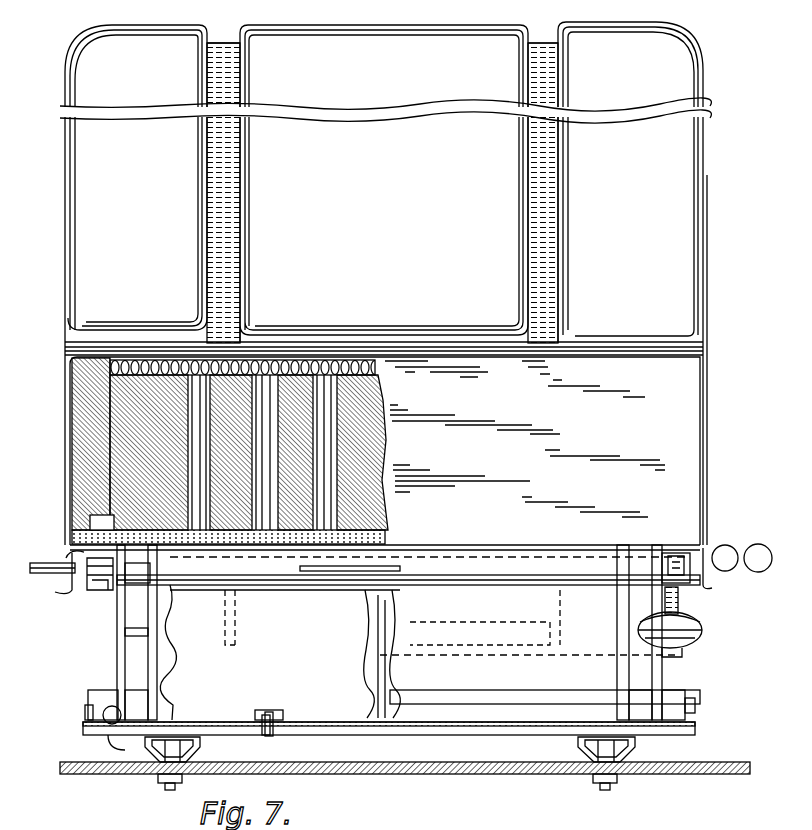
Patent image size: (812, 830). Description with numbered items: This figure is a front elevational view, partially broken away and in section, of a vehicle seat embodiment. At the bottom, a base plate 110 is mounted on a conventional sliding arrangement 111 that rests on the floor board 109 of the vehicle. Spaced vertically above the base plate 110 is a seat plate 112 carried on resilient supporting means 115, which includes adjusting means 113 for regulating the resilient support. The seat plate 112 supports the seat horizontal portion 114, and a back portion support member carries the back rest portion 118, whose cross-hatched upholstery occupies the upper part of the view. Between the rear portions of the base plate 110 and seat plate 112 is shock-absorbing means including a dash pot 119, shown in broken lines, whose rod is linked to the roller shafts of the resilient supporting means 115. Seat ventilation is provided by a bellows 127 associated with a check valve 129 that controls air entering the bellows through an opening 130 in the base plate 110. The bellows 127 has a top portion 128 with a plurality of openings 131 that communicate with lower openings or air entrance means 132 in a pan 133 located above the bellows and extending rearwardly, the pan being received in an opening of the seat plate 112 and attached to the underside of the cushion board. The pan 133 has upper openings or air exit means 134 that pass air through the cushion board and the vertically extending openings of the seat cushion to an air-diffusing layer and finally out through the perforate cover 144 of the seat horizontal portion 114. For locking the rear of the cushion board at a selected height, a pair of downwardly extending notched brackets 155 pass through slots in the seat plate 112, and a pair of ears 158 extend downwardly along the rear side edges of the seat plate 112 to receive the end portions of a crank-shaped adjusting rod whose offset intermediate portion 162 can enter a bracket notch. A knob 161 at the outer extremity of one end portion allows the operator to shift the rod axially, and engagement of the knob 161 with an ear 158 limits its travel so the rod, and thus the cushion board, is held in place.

The floor board 109 is at (370, 776).
The base plate 110 is at (360, 737).
The sliding arrangement 111 is at (138, 755).
The seat plate 112 is at (128, 530).
The adjusting means 113 is at (694, 605).
The seat horizontal portion 114 is at (64, 472).
The resilient supporting means 115 is at (110, 646).
The back rest portion 118 is at (402, 74).
The dash pot 119 is at (420, 660).
The bellows 127 is at (177, 690).
The top portion 128 is at (240, 600).
The check valve 129 is at (270, 710).
The opening 130 is at (272, 736).
The openings 131 is at (340, 588).
The lower openings 132 is at (350, 569).
The pan 133 is at (408, 572).
The upper openings 134 is at (260, 545).
The perforate cover 144 is at (292, 358).
The brackets 155 is at (236, 645).
The ears 158 is at (70, 595).
The knob 161 is at (730, 547).
The intermediate portion 162 is at (42, 563).